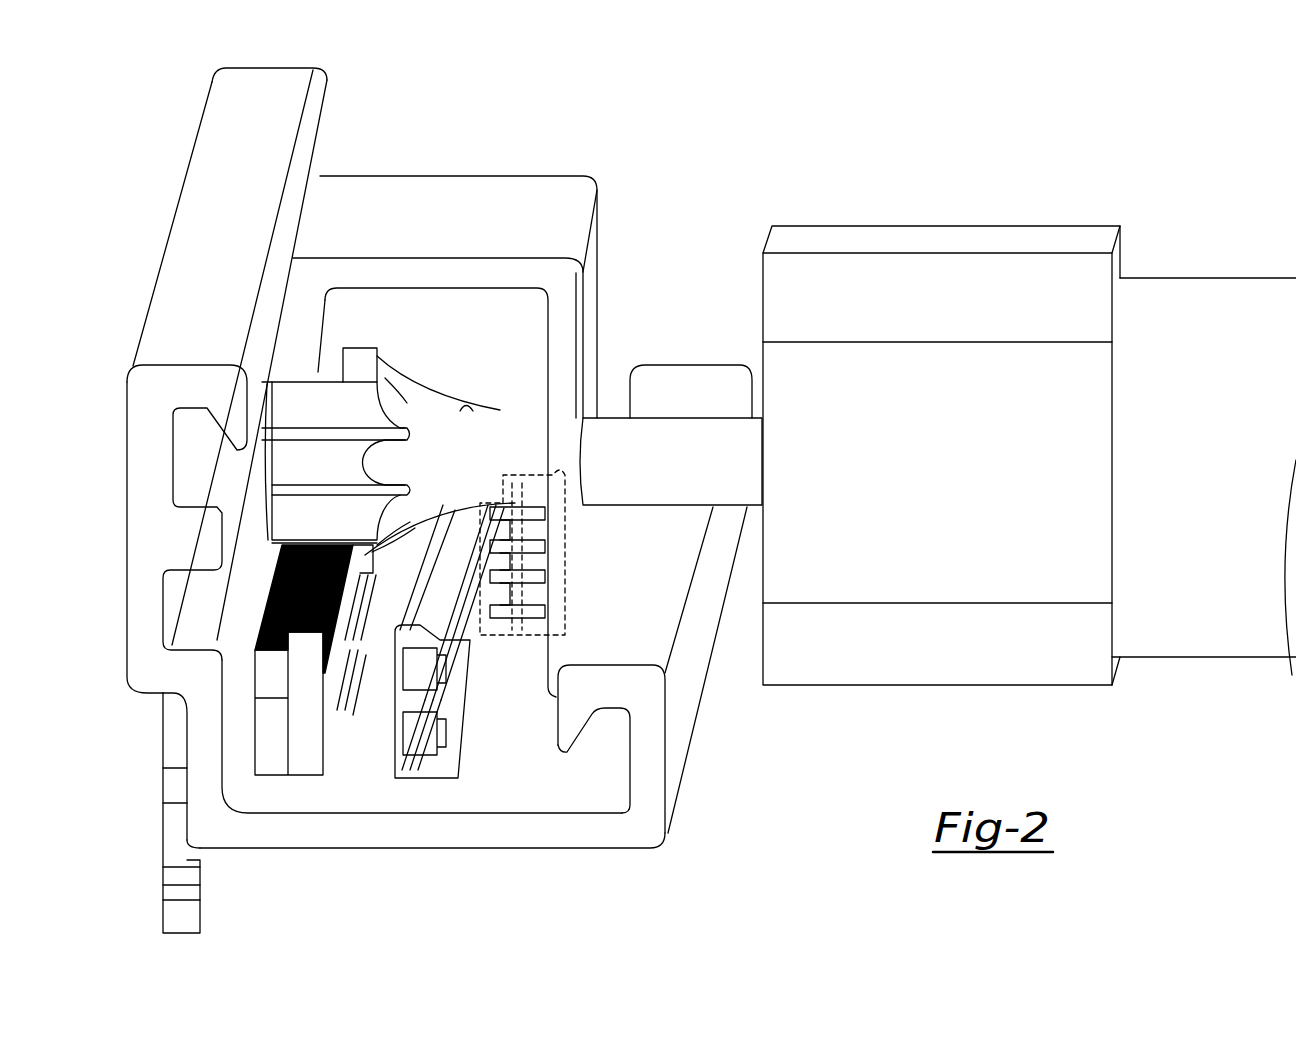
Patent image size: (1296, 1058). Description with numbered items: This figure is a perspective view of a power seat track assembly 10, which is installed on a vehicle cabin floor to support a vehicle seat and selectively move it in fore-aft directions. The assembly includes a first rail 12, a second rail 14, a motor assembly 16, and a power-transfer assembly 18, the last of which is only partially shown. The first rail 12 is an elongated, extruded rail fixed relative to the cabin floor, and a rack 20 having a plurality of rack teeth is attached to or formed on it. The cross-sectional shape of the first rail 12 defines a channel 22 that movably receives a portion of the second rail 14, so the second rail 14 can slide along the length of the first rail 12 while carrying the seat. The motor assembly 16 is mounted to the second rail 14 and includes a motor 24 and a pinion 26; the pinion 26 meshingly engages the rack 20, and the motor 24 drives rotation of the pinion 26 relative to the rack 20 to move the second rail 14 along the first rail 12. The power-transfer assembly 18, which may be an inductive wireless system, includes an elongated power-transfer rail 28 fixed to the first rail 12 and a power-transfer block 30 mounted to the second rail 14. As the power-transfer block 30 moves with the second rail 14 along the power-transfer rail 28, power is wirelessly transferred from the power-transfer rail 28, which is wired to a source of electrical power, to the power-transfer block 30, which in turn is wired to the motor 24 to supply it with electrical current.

The power seat track assembly 10 is at (148, 108).
The first rail 12 is at (178, 268).
The second rail 14 is at (497, 190).
The motor assembly 16 is at (1058, 684).
The power-transfer assembly 18 is at (495, 683).
The rack 20 is at (270, 610).
The channel 22 is at (183, 433).
The motor 24 is at (1200, 296).
The pinion 26 is at (350, 365).
The power-transfer rail 28 is at (440, 588).
The power-transfer block 30 is at (517, 528).